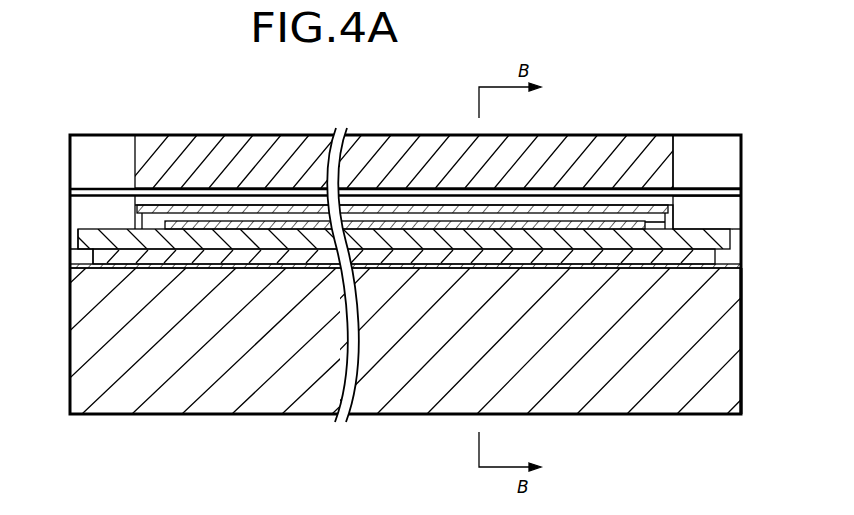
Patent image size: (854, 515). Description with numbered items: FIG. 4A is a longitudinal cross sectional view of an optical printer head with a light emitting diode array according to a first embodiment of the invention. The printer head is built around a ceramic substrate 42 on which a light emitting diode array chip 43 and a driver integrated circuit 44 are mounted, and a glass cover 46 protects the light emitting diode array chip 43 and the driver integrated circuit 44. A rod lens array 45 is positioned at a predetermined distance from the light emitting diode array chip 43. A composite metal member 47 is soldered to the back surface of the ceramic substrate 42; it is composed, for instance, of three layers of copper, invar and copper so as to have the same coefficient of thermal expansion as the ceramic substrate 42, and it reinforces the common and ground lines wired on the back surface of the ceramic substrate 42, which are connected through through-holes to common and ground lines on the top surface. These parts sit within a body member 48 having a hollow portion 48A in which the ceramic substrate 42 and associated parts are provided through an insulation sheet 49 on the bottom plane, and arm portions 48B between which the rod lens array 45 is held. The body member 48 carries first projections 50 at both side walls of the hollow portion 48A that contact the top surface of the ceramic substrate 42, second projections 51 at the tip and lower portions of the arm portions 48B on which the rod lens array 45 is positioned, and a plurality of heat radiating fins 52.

The ceramic substrate 42 is at (72, 243).
The light emitting diode array chip 43 is at (186, 218).
The driver integrated circuit 44 is at (257, 227).
The rod lens array 45 is at (603, 140).
The glass cover 46 is at (127, 198).
The composite metal member 47 is at (708, 263).
The body member 48 is at (72, 326).
The hollow portion 48A is at (740, 209).
The arm portions 48B is at (708, 137).
The insulation sheet 49 is at (72, 268).
The first projections 50 is at (731, 232).
The second projections 51 is at (728, 190).
The heat radiating fins 52 is at (733, 322).